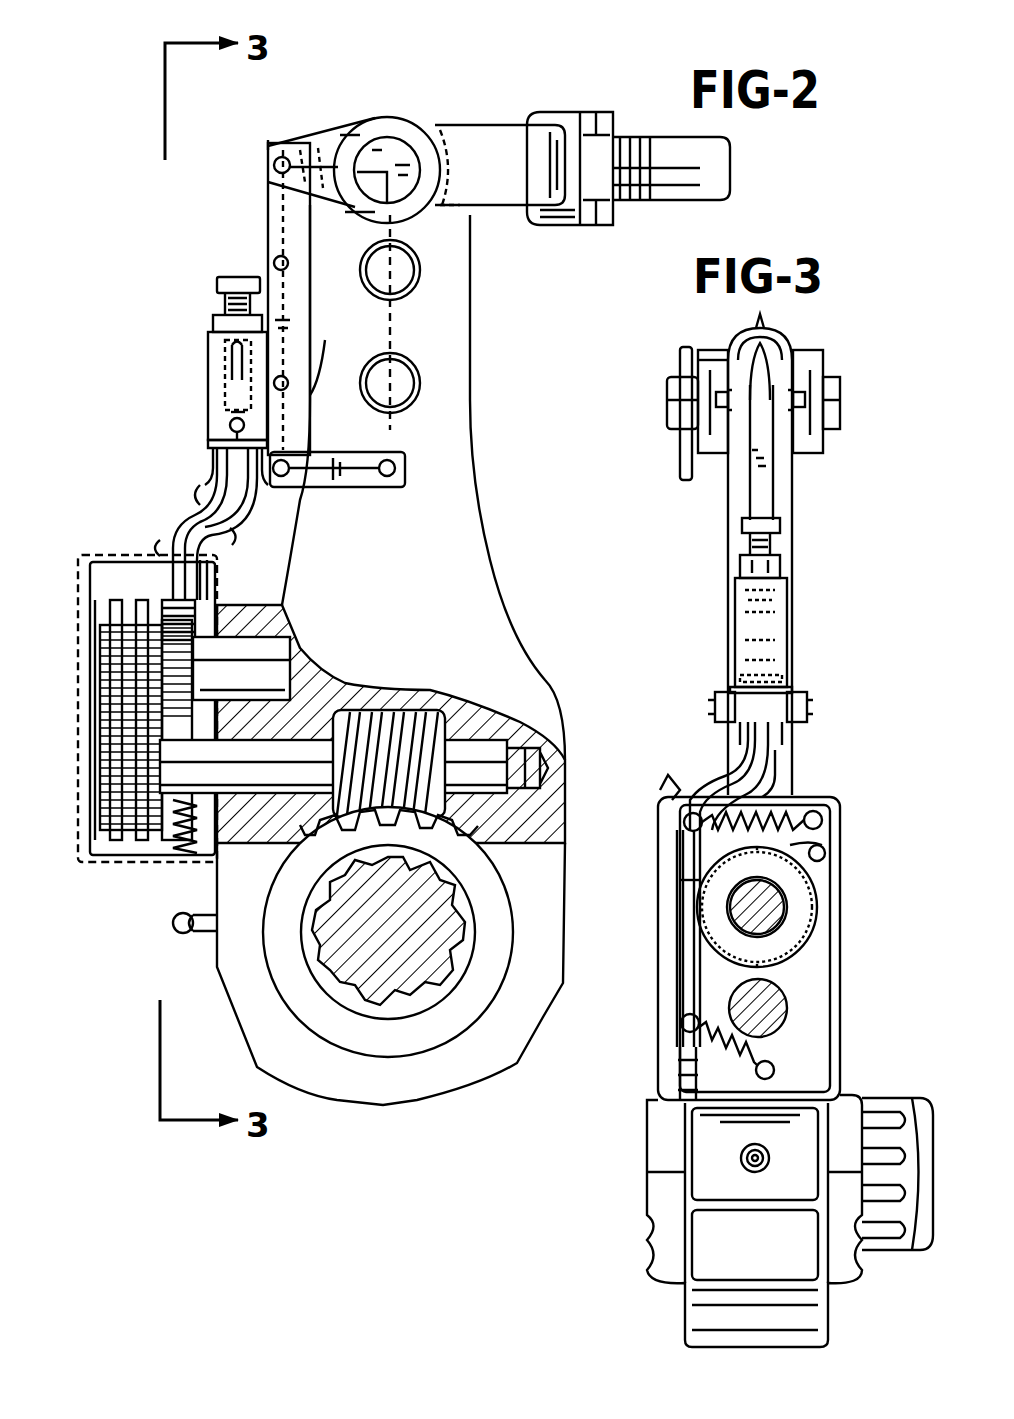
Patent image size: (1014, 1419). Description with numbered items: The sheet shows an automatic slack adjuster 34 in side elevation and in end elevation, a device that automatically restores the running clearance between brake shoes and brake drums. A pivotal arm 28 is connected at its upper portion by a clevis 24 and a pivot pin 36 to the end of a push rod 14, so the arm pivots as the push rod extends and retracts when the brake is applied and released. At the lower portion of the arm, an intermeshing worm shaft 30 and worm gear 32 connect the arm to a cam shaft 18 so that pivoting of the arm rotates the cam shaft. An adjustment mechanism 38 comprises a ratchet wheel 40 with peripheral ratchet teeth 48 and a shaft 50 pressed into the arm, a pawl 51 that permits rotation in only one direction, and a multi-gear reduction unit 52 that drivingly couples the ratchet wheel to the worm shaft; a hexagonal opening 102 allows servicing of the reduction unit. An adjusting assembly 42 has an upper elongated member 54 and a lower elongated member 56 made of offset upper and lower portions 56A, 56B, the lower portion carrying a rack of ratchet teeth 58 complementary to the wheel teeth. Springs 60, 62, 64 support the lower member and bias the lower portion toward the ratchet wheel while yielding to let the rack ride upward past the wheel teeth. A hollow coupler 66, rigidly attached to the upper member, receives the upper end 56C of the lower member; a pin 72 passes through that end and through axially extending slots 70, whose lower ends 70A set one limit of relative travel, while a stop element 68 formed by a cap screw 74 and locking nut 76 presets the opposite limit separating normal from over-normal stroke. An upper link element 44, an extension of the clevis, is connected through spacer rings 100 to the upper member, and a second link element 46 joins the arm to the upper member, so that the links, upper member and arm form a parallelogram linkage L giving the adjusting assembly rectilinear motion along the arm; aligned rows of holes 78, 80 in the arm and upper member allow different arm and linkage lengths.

In FIG. 2, the push rod 14 is at (655, 137).
In FIG. 2, the cam shaft 18 is at (388, 931).
In FIG. 3, the cam shaft 18 is at (900, 1098).
In FIG. 2, the clevis 24 is at (515, 125).
In FIG. 2, the pivotal arm 28 is at (470, 472).
In FIG. 3, the pivotal arm 28 is at (792, 540).
In FIG. 2, the worm shaft 30 is at (425, 715).
In FIG. 2, the worm gear 32 is at (388, 835).
In FIG. 2, the automatic slack adjuster 34 is at (466, 82).
In FIG. 3, the automatic slack adjuster 34 is at (666, 360).
In FIG. 2, the pivot pin 36 is at (395, 145).
In FIG. 3, the pivot pin 36 is at (670, 395).
In FIG. 2, the adjustment mechanism 38 is at (232, 351).
In FIG. 3, the adjustment mechanism 38 is at (756, 615).
In FIG. 2, the ratchet wheel 40 is at (177, 714).
In FIG. 3, the ratchet wheel 40 is at (739, 936).
In FIG. 2, the adjusting assembly 42 is at (198, 492).
In FIG. 3, the adjusting assembly 42 is at (780, 768).
In FIG. 2, the upper link element 44 is at (325, 140).
In FIG. 3, the upper link element 44 is at (715, 385).
In FIG. 2, the link element 46 is at (358, 480).
In FIG. 3, the link element 46 is at (712, 704).
In FIG. 2, the ratchet teeth 48 is at (195, 615).
In FIG. 3, the ratchet teeth 48 is at (815, 905).
In FIG. 2, the shaft 50 is at (95, 660).
In FIG. 3, the shaft 50 is at (735, 895).
In FIG. 3, the pawl 51 is at (826, 848).
In FIG. 2, the multi-gear reduction unit 52 is at (92, 718).
In FIG. 2, the upper elongated member 54 is at (268, 190).
In FIG. 3, the upper elongated member 54 is at (775, 480).
In FIG. 2, the lower elongated member 56 is at (165, 522).
In FIG. 3, the lower elongated member 56 is at (700, 760).
In FIG. 2, the upper portion 56A is at (220, 470).
In FIG. 3, the upper portion 56A is at (790, 715).
In FIG. 2, the lower portion 56B is at (208, 576).
In FIG. 3, the lower portion 56B is at (676, 915).
In FIG. 2, the upper end 56C is at (225, 432).
In FIG. 3, the upper end 56C is at (790, 625).
In FIG. 2, the ratchet teeth 58 is at (241, 668).
In FIG. 3, the ratchet teeth 58 is at (700, 958).
In FIG. 3, the spring 60 is at (800, 800).
In FIG. 2, the spring 62 is at (185, 858).
In FIG. 3, the spring 62 is at (678, 1070).
In FIG. 3, the spring 64 is at (770, 1055).
In FIG. 2, the coupler 66 is at (208, 365).
In FIG. 3, the coupler 66 is at (735, 585).
In FIG. 2, the stop element 68 is at (252, 332).
In FIG. 3, the stop element 68 is at (713, 586).
In FIG. 2, the slots 70 is at (232, 395).
In FIG. 2, the lower ends 70A is at (258, 440).
In FIG. 2, the pin 72 is at (248, 428).
In FIG. 3, the pin 72 is at (738, 662).
In FIG. 2, the cap screw 74 is at (236, 277).
In FIG. 3, the cap screw 74 is at (745, 525).
In FIG. 2, the locking nut 76 is at (213, 322).
In FIG. 3, the locking nut 76 is at (740, 567).
In FIG. 2, the holes 78 is at (412, 278).
In FIG. 2, the holes 80 is at (290, 390).
In FIG. 3, the spacer rings 100 is at (760, 348).
In FIG. 3, the hexagonal opening 102 is at (790, 997).
In FIG. 2, the parallelogram linkage L is at (392, 320).